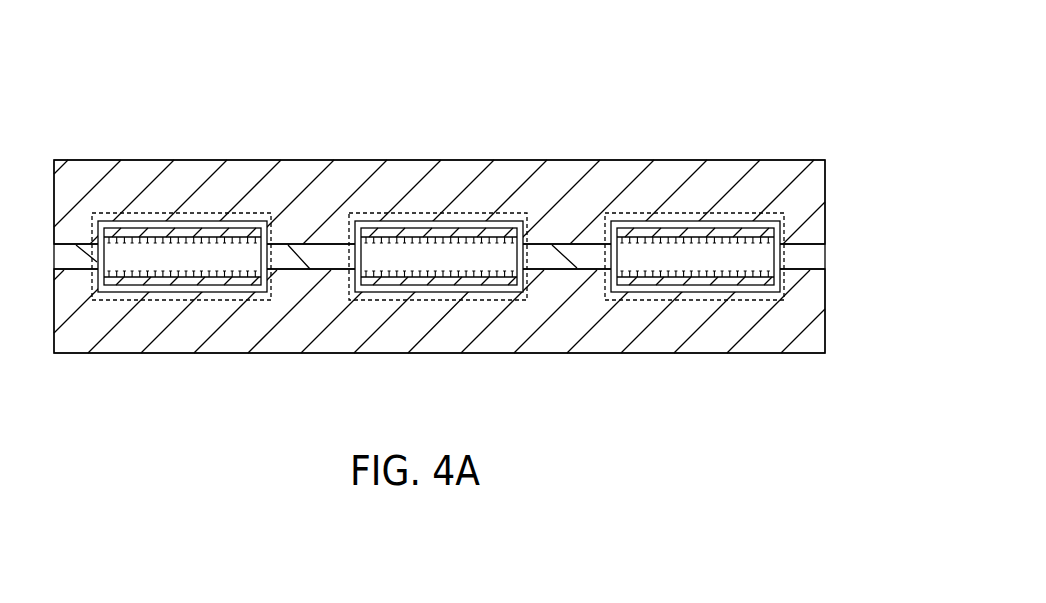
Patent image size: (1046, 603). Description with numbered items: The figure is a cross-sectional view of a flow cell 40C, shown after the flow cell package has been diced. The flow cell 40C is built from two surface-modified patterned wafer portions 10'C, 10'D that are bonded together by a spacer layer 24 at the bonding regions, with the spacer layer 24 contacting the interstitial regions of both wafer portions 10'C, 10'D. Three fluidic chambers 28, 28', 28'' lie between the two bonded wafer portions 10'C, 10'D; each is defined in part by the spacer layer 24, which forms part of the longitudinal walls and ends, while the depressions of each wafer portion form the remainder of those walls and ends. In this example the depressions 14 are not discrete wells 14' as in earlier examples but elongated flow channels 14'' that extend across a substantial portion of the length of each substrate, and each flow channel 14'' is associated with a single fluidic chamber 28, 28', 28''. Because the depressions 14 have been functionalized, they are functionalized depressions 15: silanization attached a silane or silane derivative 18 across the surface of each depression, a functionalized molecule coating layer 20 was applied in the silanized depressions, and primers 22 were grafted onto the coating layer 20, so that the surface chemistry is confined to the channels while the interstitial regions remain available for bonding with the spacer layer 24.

The flow cell 40C is at (810, 84).
The surface-modified patterned wafer portion 10'C is at (488, 202).
The surface-modified patterned wafer portion 10'D is at (488, 311).
The spacer layer 24 is at (573, 255).
The fluidic chamber 28 is at (184, 179).
The fluidic chamber 28' is at (441, 179).
The fluidic chamber 28'' is at (697, 179).
The depression 14 is at (182, 257).
The well 14' is at (181, 257).
The flow channel 14'' is at (698, 262).
The primer 22 is at (438, 257).
The silane or silane derivative 18 is at (632, 288).
The functionalized molecule coating layer 20 is at (744, 287).
The functionalized depression 15 is at (687, 258).